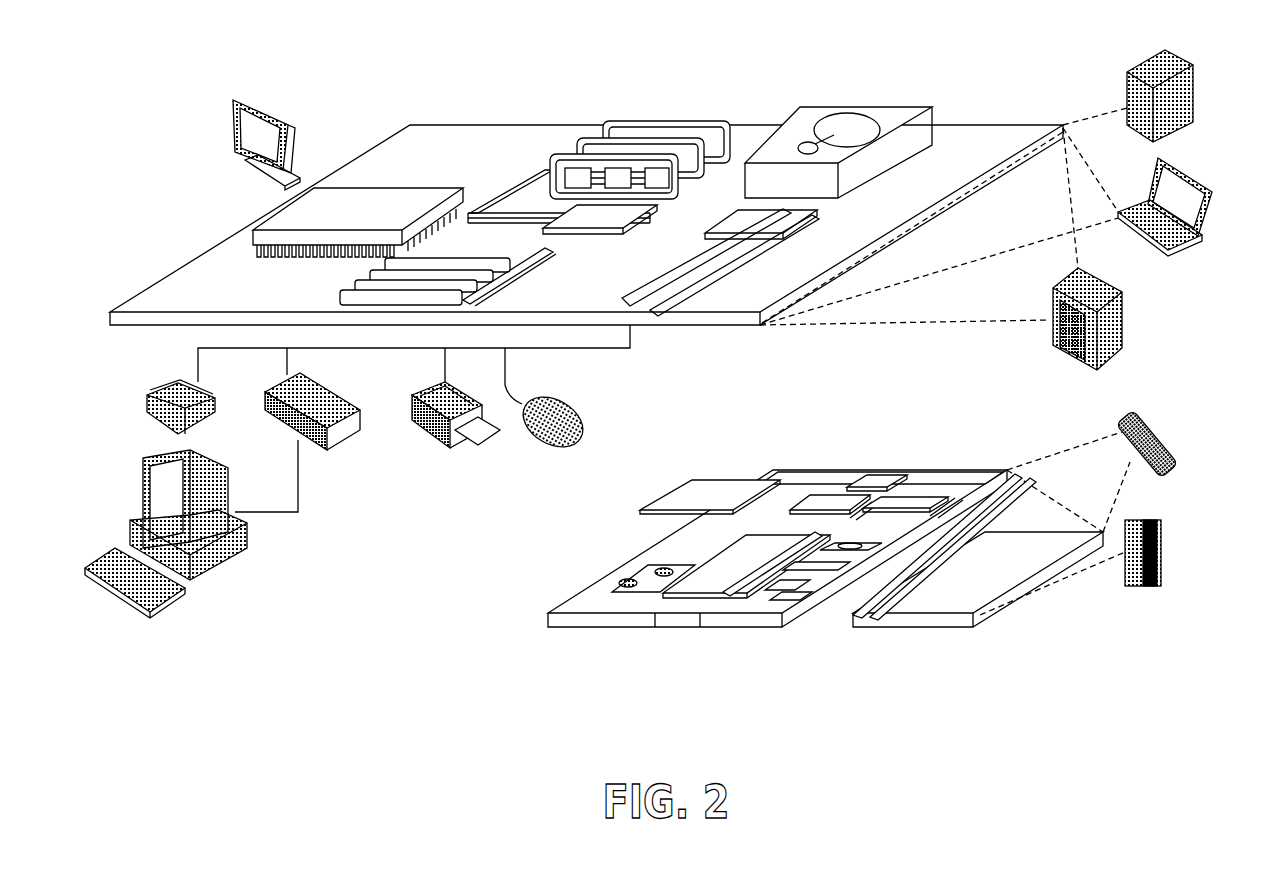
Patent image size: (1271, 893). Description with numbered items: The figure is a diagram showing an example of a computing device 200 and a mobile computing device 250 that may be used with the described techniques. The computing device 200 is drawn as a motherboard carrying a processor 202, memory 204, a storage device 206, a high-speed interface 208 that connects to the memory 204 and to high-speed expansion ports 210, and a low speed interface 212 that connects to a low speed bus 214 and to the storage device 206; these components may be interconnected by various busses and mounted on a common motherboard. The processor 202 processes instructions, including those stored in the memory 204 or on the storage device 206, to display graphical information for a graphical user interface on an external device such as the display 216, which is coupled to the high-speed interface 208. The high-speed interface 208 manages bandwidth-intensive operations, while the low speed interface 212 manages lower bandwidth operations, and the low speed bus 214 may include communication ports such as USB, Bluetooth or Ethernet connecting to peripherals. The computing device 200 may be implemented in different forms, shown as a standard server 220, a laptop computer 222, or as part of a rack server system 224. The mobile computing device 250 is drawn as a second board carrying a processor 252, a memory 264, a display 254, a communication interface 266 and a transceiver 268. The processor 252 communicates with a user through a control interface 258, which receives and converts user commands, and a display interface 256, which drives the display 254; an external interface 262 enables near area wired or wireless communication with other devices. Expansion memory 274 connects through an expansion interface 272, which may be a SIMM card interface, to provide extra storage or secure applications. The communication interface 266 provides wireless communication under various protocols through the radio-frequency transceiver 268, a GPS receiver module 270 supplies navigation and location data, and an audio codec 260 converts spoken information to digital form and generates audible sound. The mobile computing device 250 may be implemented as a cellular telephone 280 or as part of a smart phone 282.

The computing device 200 is at (366, 57).
The processor 202 is at (263, 216).
The memory 204 is at (652, 122).
The storage device 206 is at (840, 112).
The high-speed interface 208 is at (607, 240).
The high-speed expansion ports 210 is at (343, 292).
The low speed interface 212 is at (742, 220).
The low speed bus 214 is at (628, 302).
The display 216 is at (242, 104).
The standard server 220 is at (1136, 70).
The laptop computer 222 is at (1176, 246).
The rack server system 224 is at (1123, 318).
The mobile computing device 250 is at (508, 641).
The processor 252 is at (722, 557).
The display 254 is at (1038, 530).
The display interface 256 is at (795, 603).
The control interface 258 is at (880, 568).
The audio codec 260 is at (898, 553).
The external interface 262 is at (680, 627).
The memory 264 is at (626, 576).
The communication interface 266 is at (820, 494).
The transceiver 268 is at (912, 496).
The GPS receiver module 270 is at (880, 473).
The expansion interface 272 is at (778, 472).
The expansion memory 274 is at (694, 481).
The cellular telephone 280 is at (1130, 420).
The smart phone 282 is at (1140, 520).